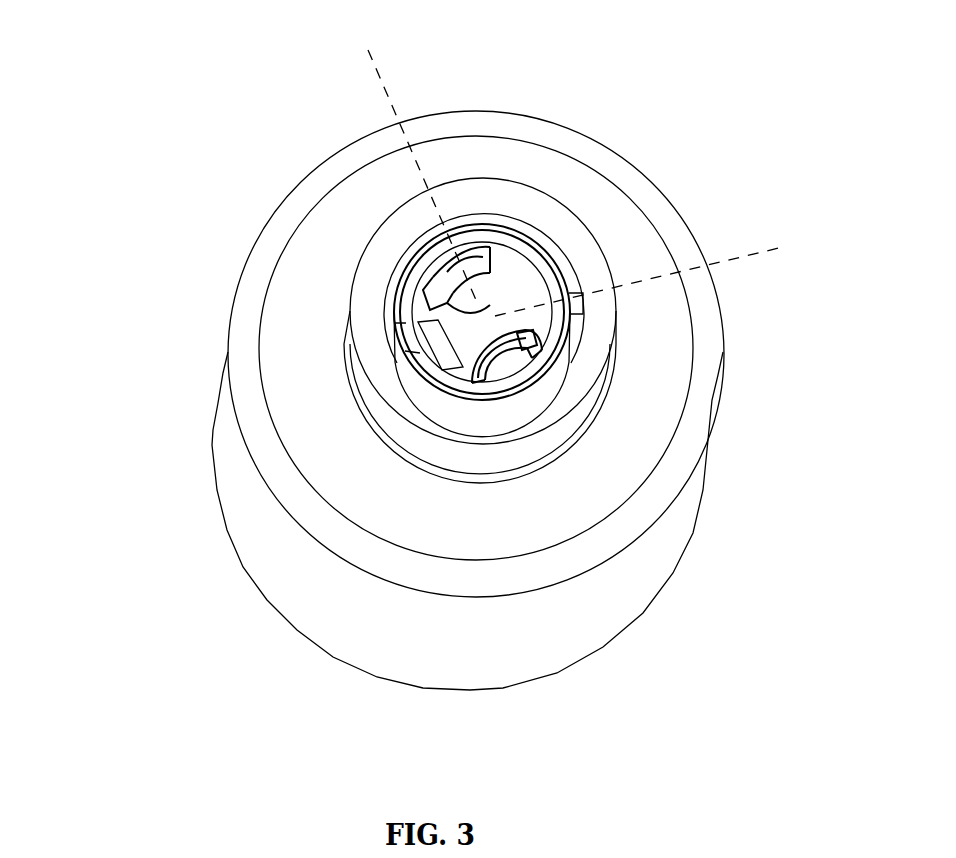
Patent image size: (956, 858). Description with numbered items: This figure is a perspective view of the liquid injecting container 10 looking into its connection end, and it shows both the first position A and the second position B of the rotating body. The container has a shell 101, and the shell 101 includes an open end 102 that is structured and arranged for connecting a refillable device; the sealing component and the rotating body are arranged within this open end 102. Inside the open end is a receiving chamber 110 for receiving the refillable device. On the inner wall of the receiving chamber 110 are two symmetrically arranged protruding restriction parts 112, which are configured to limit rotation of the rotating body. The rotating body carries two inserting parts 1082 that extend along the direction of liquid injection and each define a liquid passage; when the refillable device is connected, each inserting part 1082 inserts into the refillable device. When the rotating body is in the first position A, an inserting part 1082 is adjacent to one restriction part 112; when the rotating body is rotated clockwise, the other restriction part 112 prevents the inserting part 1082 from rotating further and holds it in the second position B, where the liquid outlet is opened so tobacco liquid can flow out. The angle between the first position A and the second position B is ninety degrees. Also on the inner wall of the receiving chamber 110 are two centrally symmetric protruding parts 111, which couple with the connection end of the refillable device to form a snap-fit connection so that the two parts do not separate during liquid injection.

The liquid injecting container 10 is at (427, 359).
The shell 101 is at (213, 403).
The open end 102 is at (445, 398).
The receiving chamber 110 is at (520, 297).
The protruding part 111 is at (576, 296).
The restriction part 112 is at (430, 300).
The inserting part 1082 is at (482, 243).
The first position A is at (380, 80).
The second position B is at (783, 247).